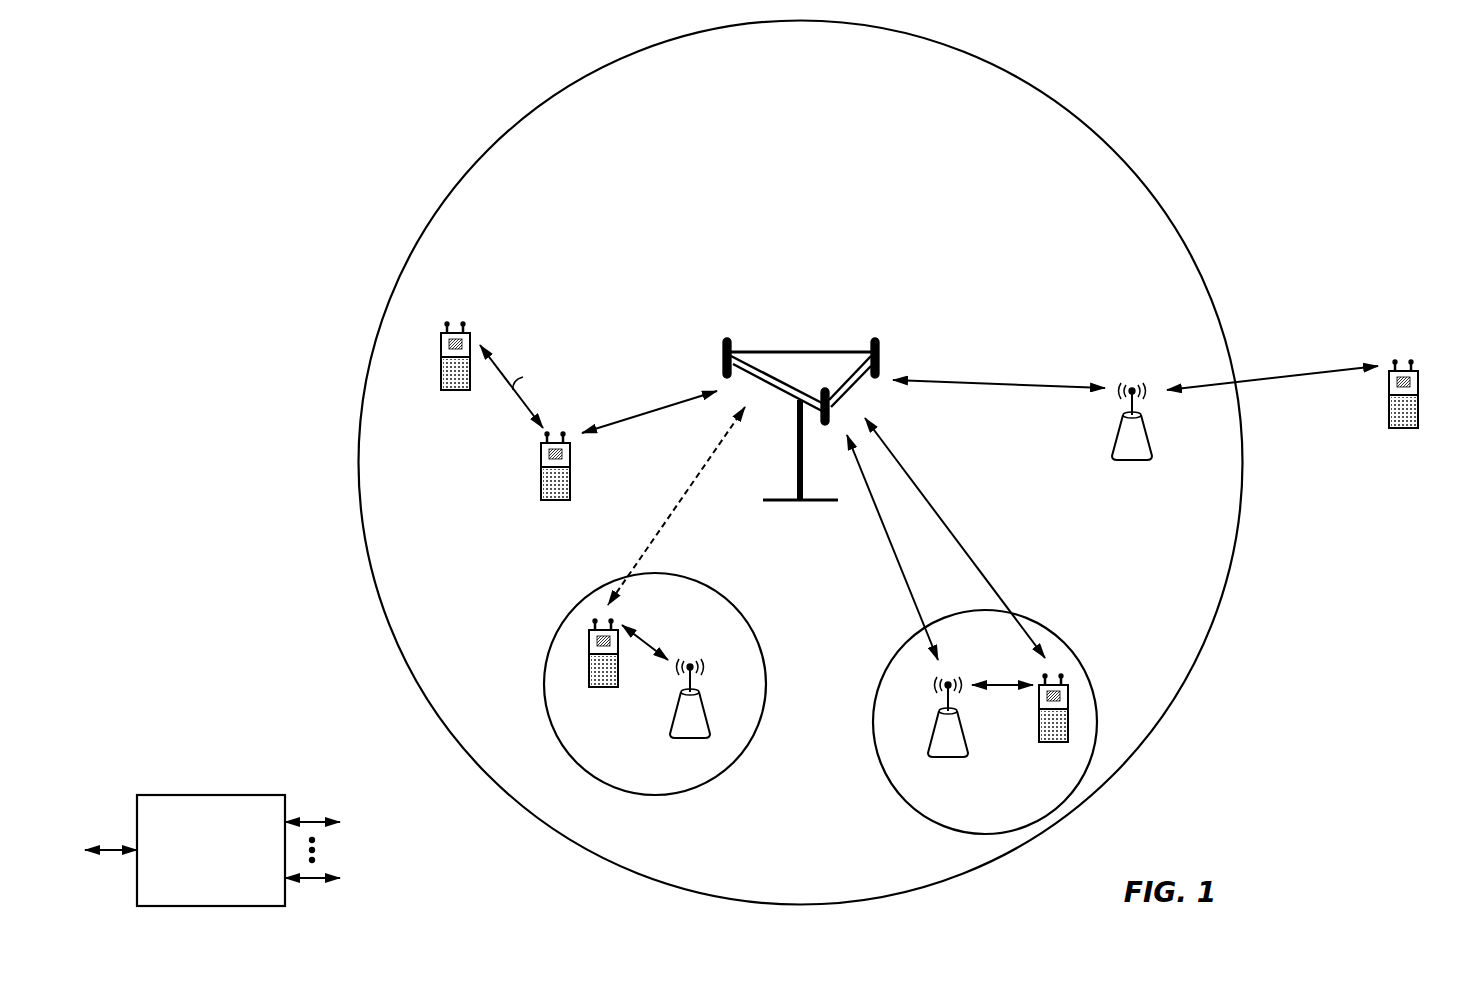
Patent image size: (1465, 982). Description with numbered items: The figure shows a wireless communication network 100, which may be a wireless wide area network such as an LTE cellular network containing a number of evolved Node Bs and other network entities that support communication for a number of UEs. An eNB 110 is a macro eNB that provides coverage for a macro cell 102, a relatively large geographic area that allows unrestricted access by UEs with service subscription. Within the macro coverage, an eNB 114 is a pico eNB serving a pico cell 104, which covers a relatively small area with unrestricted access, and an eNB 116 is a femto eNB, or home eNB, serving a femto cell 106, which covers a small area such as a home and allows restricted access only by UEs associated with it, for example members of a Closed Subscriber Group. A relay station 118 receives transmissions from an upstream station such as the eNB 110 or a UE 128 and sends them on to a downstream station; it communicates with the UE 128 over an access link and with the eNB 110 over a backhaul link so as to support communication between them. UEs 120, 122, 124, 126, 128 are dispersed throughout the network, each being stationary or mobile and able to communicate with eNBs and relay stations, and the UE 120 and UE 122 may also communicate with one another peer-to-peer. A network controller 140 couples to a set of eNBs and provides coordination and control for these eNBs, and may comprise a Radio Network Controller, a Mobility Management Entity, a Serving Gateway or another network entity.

The wireless communication network 100 is at (360, 94).
The macro cell 102 is at (1093, 131).
The pico cell 104 is at (747, 599).
The femto cell 106 is at (1082, 636).
The eNB 110 is at (797, 350).
The eNB 114 is at (709, 726).
The eNB 116 is at (929, 739).
The relay station 118 is at (1150, 449).
The UE 120 is at (541, 470).
The UE 122 is at (441, 344).
The UE 124 is at (589, 687).
The UE 126 is at (1039, 741).
The UE 128 is at (1418, 383).
The network controller 140 is at (206, 795).